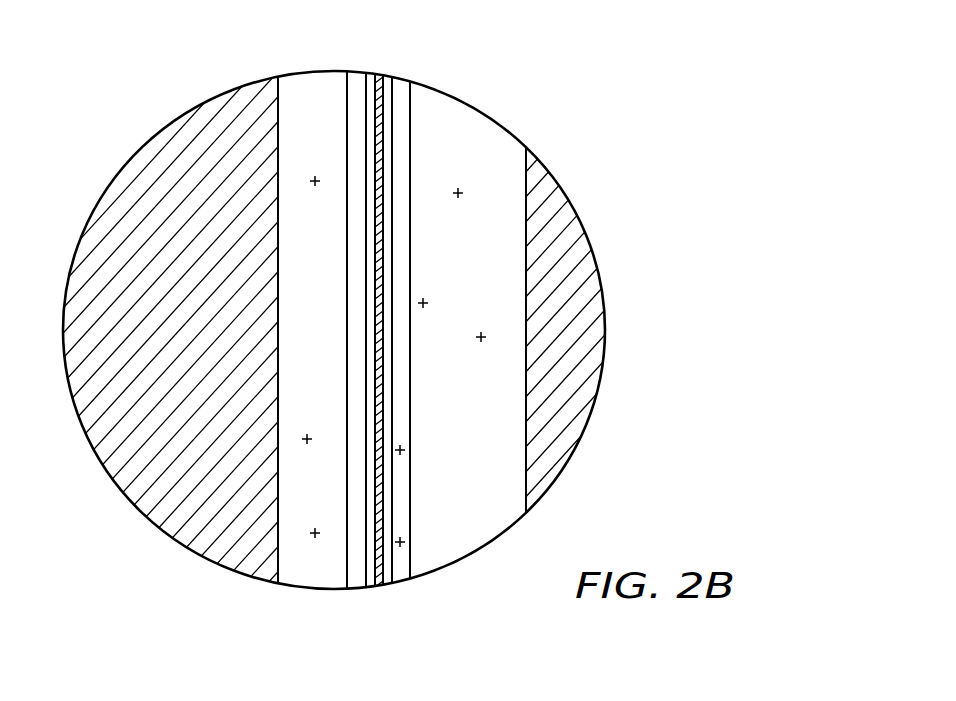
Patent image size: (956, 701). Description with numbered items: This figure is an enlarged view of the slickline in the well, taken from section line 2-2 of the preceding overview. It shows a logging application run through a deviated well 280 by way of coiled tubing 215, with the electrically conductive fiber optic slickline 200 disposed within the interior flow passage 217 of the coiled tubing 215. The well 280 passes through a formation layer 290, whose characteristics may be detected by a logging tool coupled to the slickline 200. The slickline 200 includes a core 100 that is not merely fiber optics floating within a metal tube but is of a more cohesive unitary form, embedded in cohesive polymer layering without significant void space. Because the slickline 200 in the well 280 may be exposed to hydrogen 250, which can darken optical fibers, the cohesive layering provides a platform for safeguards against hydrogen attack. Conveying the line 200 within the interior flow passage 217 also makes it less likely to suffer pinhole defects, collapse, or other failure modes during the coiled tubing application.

The section line 2-2 is at (90, 222).
The formation layer 290 is at (173, 296).
The coiled tubing 215 is at (344, 92).
The interior flow passage 217 is at (355, 558).
The core 100 is at (378, 331).
The slickline 200 is at (396, 135).
The well 280 is at (488, 460).
The hydrogen 250 is at (456, 196).